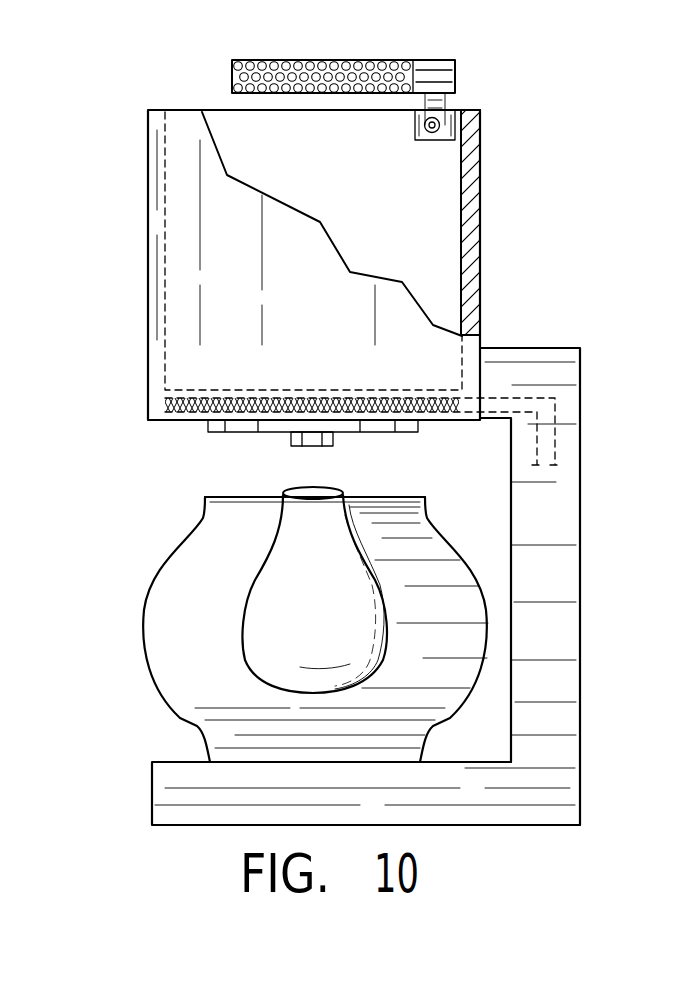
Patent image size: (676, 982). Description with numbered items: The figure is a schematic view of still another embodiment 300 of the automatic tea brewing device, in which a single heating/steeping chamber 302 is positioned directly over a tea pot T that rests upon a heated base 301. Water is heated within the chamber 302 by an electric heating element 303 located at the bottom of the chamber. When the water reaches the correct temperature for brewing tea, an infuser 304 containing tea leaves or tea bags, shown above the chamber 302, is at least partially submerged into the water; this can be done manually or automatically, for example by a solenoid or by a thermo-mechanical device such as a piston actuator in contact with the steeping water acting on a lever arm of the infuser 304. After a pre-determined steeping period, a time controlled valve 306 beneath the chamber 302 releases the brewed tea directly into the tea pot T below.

The automatic tea brewing device 300 is at (512, 175).
The heated base 301 is at (240, 778).
The heating/steeping chamber 302 is at (400, 230).
The electric heating element 303 is at (190, 412).
The infuser 304 is at (292, 60).
The time controlled valve 306 is at (312, 446).
The tea pot T is at (196, 678).